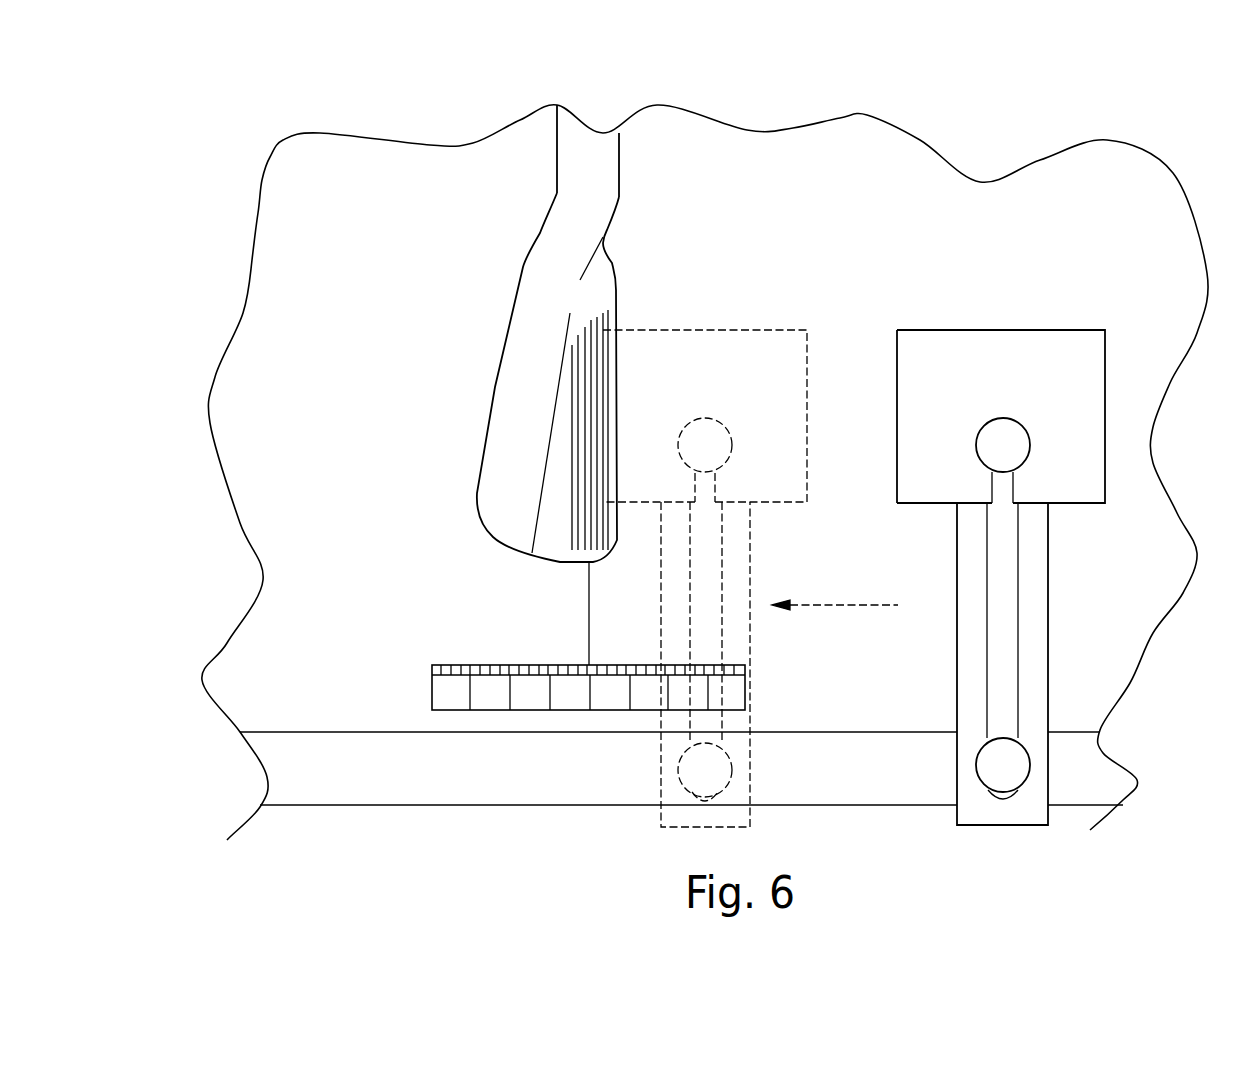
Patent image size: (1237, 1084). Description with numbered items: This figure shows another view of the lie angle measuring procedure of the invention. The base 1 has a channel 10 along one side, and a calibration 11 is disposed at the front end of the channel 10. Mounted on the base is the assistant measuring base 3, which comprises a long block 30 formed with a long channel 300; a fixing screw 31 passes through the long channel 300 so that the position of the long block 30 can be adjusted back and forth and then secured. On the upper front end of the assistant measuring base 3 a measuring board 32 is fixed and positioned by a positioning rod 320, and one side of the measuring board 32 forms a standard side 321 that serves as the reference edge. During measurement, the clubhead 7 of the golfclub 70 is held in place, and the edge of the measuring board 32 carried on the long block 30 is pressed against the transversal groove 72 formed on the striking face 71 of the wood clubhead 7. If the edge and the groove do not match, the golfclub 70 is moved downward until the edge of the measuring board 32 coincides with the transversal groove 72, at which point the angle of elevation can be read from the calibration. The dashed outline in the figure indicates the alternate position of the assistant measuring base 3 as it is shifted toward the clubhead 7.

The base 1 is at (312, 515).
The channel 10 is at (450, 772).
The calibration 11 is at (447, 690).
The assistant measuring base 3 is at (1020, 519).
The long block 30 is at (1071, 664).
The long channel 300 is at (1003, 593).
The fixing screw 31 is at (1003, 765).
The measuring board 32 is at (1020, 358).
The positioning rod 320 is at (1003, 445).
The standard side 321 is at (897, 380).
The clubhead 7 is at (483, 377).
The golfclub 70 is at (587, 167).
The striking face 71 is at (553, 537).
The transversal groove 72 is at (590, 353).